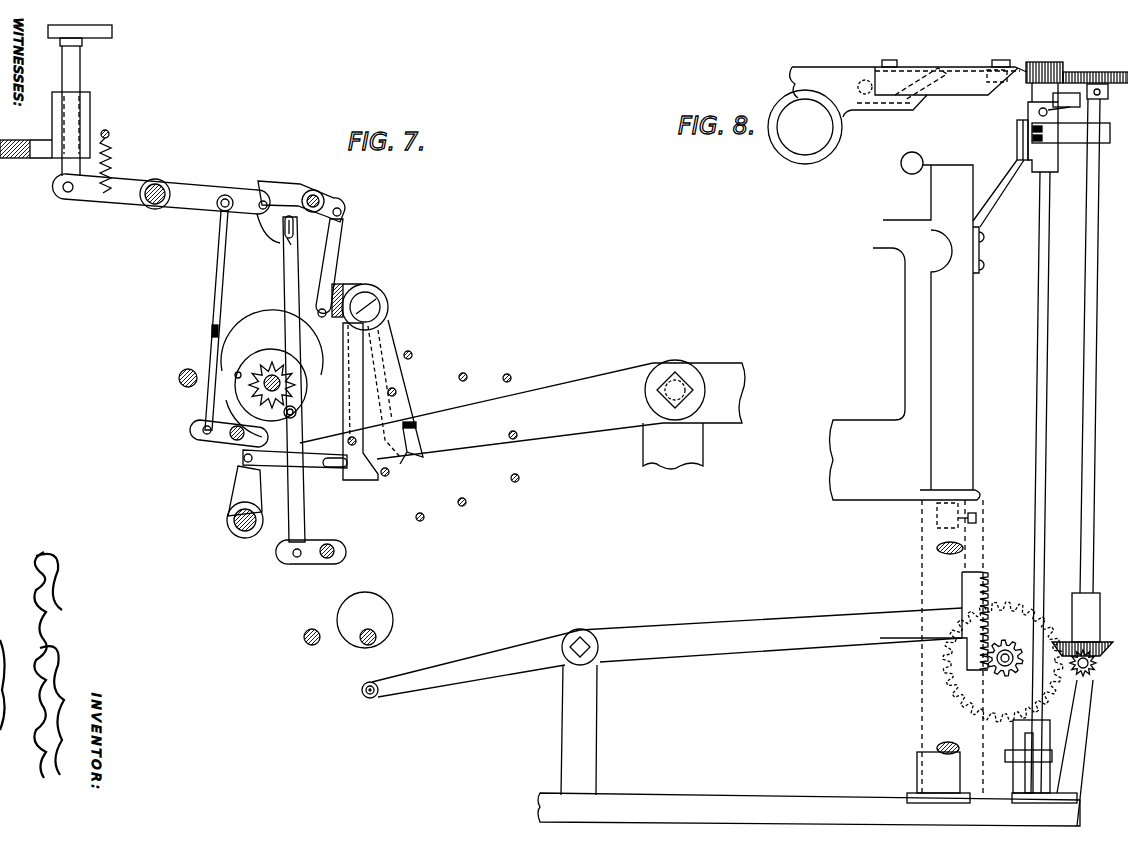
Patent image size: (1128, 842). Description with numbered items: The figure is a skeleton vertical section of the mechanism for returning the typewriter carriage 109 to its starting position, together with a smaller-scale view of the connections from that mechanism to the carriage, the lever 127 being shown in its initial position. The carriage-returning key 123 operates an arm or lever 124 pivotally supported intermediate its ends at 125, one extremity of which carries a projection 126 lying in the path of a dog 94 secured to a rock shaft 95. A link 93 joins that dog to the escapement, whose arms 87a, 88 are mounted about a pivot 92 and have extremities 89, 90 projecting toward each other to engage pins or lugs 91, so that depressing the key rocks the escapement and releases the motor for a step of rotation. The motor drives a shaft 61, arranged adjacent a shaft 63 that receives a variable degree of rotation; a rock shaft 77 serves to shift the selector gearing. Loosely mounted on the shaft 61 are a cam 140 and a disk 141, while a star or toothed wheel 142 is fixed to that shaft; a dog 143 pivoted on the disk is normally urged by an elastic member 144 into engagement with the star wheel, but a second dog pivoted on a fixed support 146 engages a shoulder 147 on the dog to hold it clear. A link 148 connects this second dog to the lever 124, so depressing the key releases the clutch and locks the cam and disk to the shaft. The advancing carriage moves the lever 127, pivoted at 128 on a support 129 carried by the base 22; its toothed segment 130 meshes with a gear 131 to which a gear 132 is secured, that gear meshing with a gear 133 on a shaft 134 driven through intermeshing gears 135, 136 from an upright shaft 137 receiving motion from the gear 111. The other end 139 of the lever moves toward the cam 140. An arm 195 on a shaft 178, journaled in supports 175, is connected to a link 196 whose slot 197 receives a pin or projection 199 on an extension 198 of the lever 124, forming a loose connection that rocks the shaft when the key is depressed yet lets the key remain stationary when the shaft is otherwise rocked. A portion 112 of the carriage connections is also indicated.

In FIG. 8, the base 22 is at (718, 796).
In FIG. 7, the shaft 61 is at (263, 381).
In FIG. 8, the shaft 61 is at (369, 629).
In FIG. 7, the shaft 63 is at (185, 388).
In FIG. 8, the shaft 63 is at (312, 646).
In FIG. 7, the rock shaft 77 is at (244, 539).
In FIG. 7, the escapement arm 87a is at (356, 345).
In FIG. 7, the escapement arm 88 is at (410, 351).
In FIG. 7, the extremity of escapement arm 89 is at (368, 481).
In FIG. 7, the extremity of escapement arm 90 is at (410, 456).
In FIG. 7, the pins or lugs 91 is at (505, 376).
In FIG. 7, the pivot 92 is at (375, 298).
In FIG. 7, the link 93 is at (345, 214).
In FIG. 7, the dog 94 is at (278, 182).
In FIG. 7, the rock shaft 95 is at (318, 192).
In FIG. 8, the typewriter carriage 109 is at (857, 113).
In FIG. 8, the gear 111 is at (1062, 68).
In FIG. 8, the bracket 112 is at (1014, 78).
In FIG. 7, the carriage-returning key 123 is at (96, 33).
In FIG. 7, the arm or lever 124 is at (181, 183).
In FIG. 7, the pivot 125 is at (152, 210).
In FIG. 7, the projection 126 is at (262, 200).
In FIG. 7, the arm or lever 127 is at (597, 392).
In FIG. 8, the arm or lever 127 is at (667, 652).
In FIG. 7, the pivot 128 is at (690, 388).
In FIG. 8, the pivot 128 is at (583, 629).
In FIG. 7, the support 129 is at (673, 446).
In FIG. 8, the support 129 is at (579, 730).
In FIG. 8, the toothed segment 130 is at (962, 586).
In FIG. 8, the gear 131 is at (1005, 641).
In FIG. 8, the gear 132 is at (1040, 620).
In FIG. 8, the gear 133 is at (1080, 660).
In FIG. 8, the shaft 134 is at (1086, 677).
In FIG. 8, the gear 135 is at (1100, 646).
In FIG. 8, the gear 136 is at (1108, 88).
In FIG. 8, the upright shaft 137 is at (1090, 470).
In FIG. 7, the end of arm or lever 139 is at (330, 470).
In FIG. 8, the end of arm or lever 139 is at (385, 698).
In FIG. 7, the cam 140 is at (258, 318).
In FIG. 8, the cam 140 is at (393, 613).
In FIG. 7, the disk 141 is at (246, 352).
In FIG. 7, the star or toothed wheel 142 is at (269, 366).
In FIG. 7, the dog 143 is at (334, 319).
In FIG. 7, the elastic member 144 is at (200, 424).
In FIG. 7, the fixed support 146 is at (232, 439).
In FIG. 7, the shoulder 147 is at (306, 413).
In FIG. 7, the link 148 is at (217, 270).
In FIG. 7, the supports 175 is at (262, 452).
In FIG. 7, the shaft 178 is at (335, 551).
In FIG. 7, the arm 195 is at (297, 562).
In FIG. 7, the link 196 is at (299, 522).
In FIG. 7, the slot 197 is at (293, 226).
In FIG. 7, the extension 198 is at (261, 226).
In FIG. 7, the pin or projection 199 is at (287, 239).